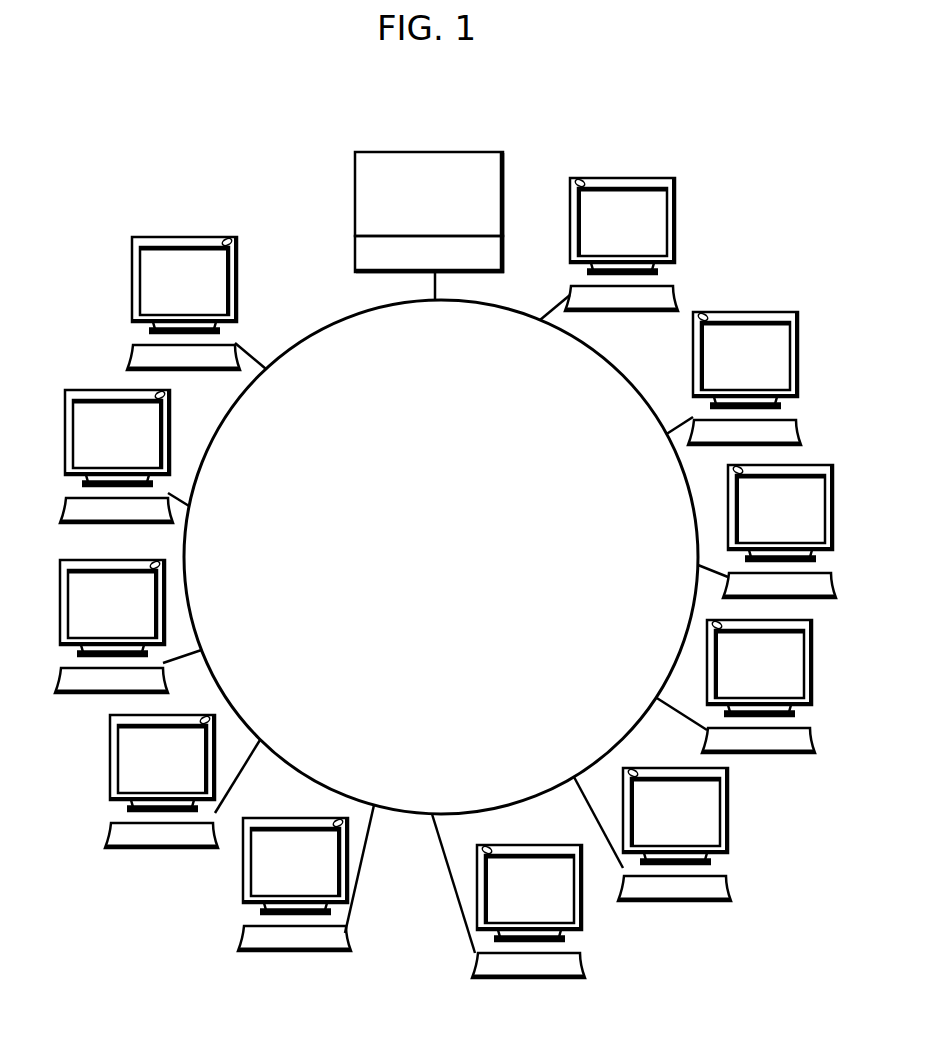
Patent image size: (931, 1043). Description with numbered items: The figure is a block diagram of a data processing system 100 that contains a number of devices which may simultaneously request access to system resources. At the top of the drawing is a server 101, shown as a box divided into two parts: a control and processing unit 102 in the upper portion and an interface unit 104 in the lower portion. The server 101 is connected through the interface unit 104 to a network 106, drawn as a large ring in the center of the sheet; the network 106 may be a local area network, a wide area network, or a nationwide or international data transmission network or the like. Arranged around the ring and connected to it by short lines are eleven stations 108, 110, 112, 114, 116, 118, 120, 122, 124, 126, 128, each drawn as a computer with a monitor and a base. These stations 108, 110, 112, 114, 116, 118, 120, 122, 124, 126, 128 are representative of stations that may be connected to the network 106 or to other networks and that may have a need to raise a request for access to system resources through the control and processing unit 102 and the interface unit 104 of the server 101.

The data processing system 100 is at (200, 144).
The server 101 is at (491, 152).
The control and processing unit 102 is at (355, 195).
The interface unit 104 is at (503, 252).
The network 106 is at (310, 337).
The station 108 is at (132, 347).
The station 110 is at (63, 502).
The station 112 is at (62, 670).
The station 114 is at (110, 825).
The station 116 is at (242, 930).
The station 118 is at (578, 957).
The station 120 is at (730, 873).
The station 122 is at (813, 733).
The station 124 is at (832, 582).
The station 126 is at (795, 430).
The station 128 is at (692, 290).